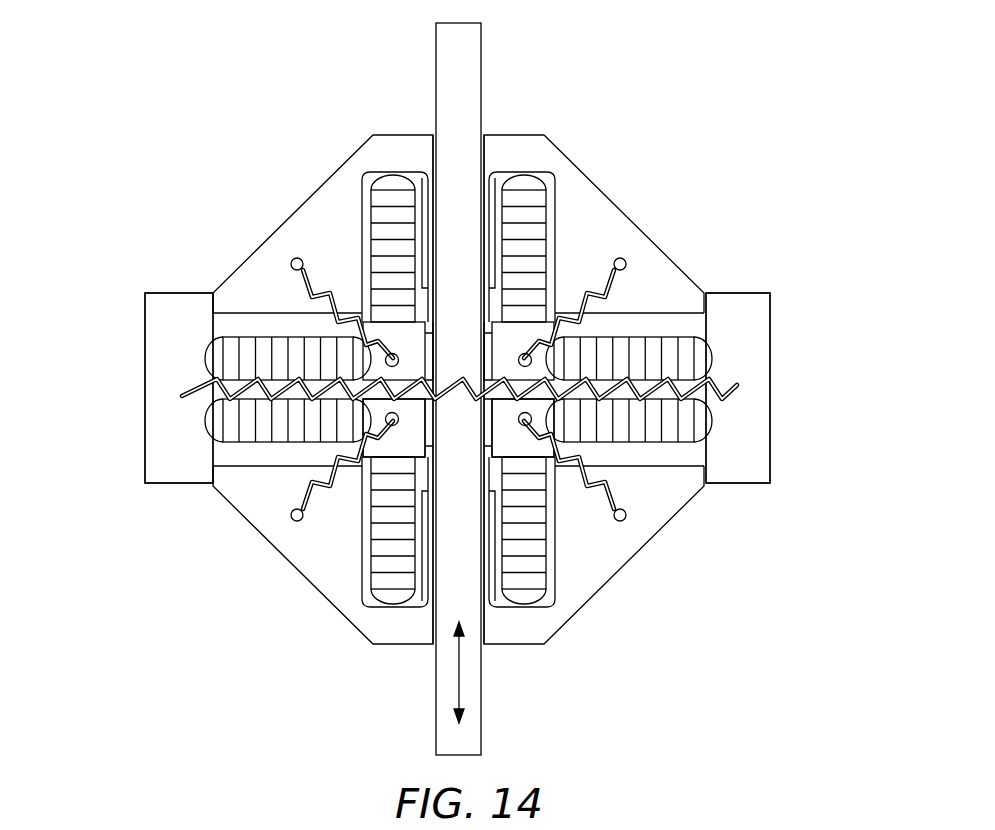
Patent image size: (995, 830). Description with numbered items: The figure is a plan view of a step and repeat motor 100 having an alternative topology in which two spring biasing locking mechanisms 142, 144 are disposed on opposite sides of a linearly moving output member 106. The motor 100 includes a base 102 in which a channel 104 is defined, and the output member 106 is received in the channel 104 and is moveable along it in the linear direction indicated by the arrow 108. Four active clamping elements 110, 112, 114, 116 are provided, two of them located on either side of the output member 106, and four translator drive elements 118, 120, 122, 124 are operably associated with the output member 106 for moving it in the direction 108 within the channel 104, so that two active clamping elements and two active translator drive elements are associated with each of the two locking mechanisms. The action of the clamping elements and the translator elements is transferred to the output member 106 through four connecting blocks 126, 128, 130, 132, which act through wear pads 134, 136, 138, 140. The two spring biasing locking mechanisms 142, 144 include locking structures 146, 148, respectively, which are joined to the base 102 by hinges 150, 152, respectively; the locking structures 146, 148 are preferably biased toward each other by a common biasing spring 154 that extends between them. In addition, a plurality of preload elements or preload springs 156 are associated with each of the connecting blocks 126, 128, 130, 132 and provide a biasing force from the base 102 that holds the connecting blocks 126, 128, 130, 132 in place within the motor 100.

The step and repeat motor 100 is at (722, 126).
The base 102 is at (340, 188).
The channel 104 is at (435, 160).
The output member 106 is at (482, 103).
The arrow 108 is at (462, 675).
The active clamping element 110 is at (253, 343).
The active clamping element 112 is at (238, 430).
The active clamping element 114 is at (651, 345).
The active clamping element 116 is at (667, 430).
The translator drive element 118 is at (396, 218).
The translator drive element 120 is at (387, 572).
The translator drive element 122 is at (537, 217).
The translator drive element 124 is at (537, 572).
The connecting block 126 is at (403, 333).
The connecting block 128 is at (303, 490).
The connecting block 130 is at (542, 330).
The connecting block 132 is at (527, 447).
The wear pad 134 is at (430, 353).
The wear pad 136 is at (380, 448).
The wear pad 138 is at (485, 357).
The wear pad 140 is at (488, 420).
The spring biasing locking mechanism 142 is at (126, 388).
The spring biasing locking mechanism 144 is at (798, 388).
The locking structure 146 is at (165, 328).
The locking structure 148 is at (755, 328).
The hinge 150 is at (212, 300).
The hinge 152 is at (705, 477).
The common biasing spring 154 is at (182, 400).
The preload spring 156 is at (305, 270).